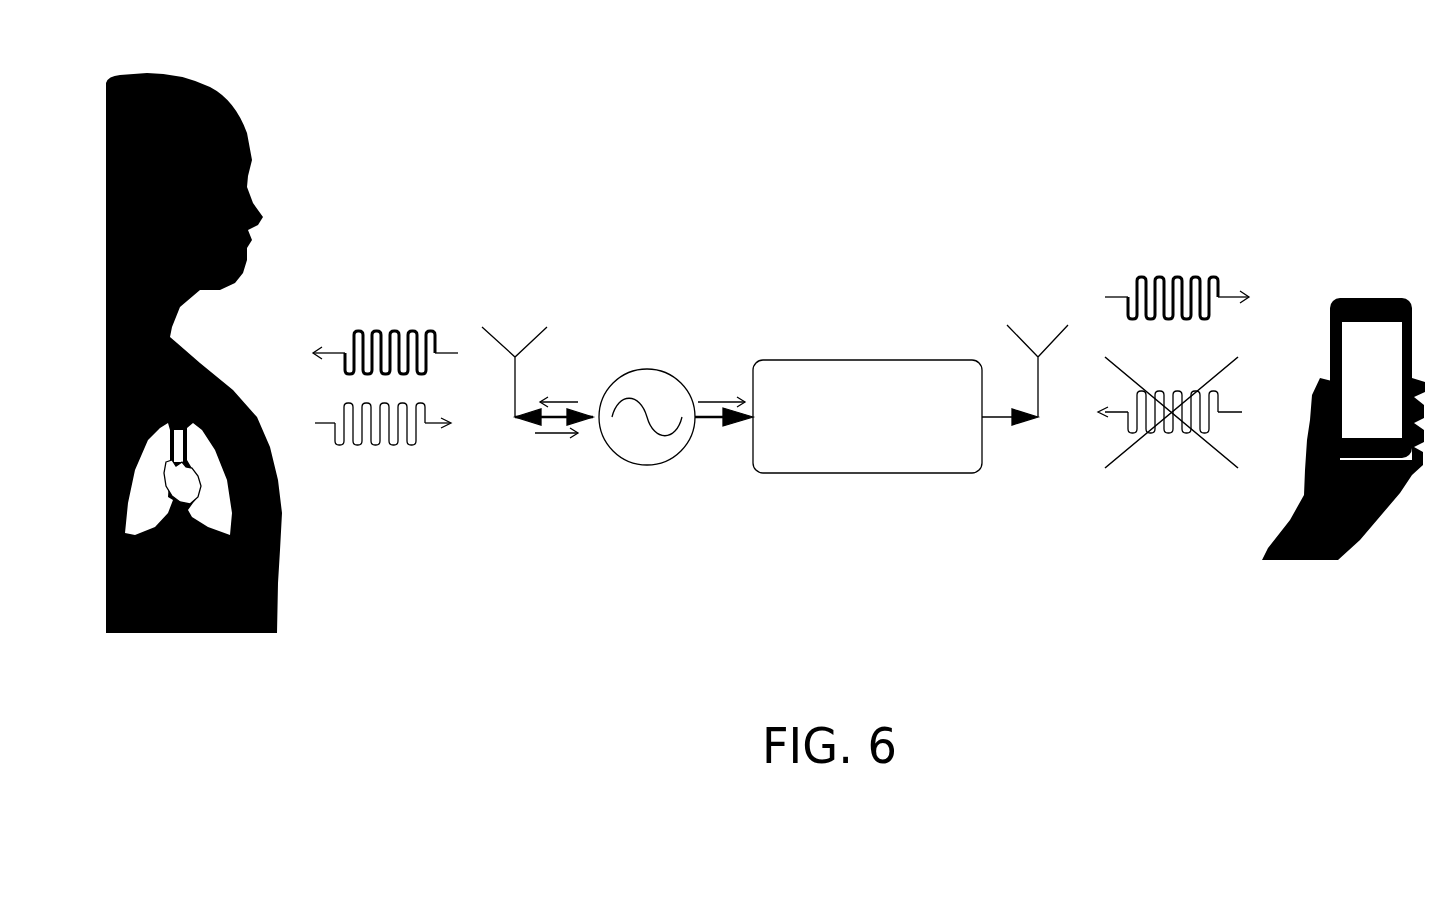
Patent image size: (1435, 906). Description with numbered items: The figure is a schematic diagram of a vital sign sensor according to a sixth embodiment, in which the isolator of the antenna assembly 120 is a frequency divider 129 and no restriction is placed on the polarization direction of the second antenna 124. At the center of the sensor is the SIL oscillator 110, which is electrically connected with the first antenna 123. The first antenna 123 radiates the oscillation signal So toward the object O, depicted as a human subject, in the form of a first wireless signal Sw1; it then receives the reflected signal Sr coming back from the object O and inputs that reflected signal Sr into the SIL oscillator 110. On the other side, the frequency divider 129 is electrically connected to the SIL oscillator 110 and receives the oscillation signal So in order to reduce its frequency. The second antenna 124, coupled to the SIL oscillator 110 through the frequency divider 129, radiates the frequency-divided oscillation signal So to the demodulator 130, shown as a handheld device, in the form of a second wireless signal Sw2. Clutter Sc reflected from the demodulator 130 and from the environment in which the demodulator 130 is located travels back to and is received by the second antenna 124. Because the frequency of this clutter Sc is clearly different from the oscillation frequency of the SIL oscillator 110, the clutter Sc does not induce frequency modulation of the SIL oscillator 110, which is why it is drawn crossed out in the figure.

The object O is at (247, 122).
The antenna assembly 120 is at (513, 228).
The first antenna 123 is at (500, 340).
The SIL oscillator 110 is at (645, 365).
The frequency divider 129 is at (858, 360).
The second antenna 124 is at (1022, 338).
The demodulator 130 is at (1387, 297).
The first wireless signal Sw1 is at (385, 330).
The reflected signal Sr is at (385, 447).
The oscillation signal So is at (642, 385).
The second wireless signal Sw2 is at (1170, 277).
The clutter Sc is at (1165, 435).